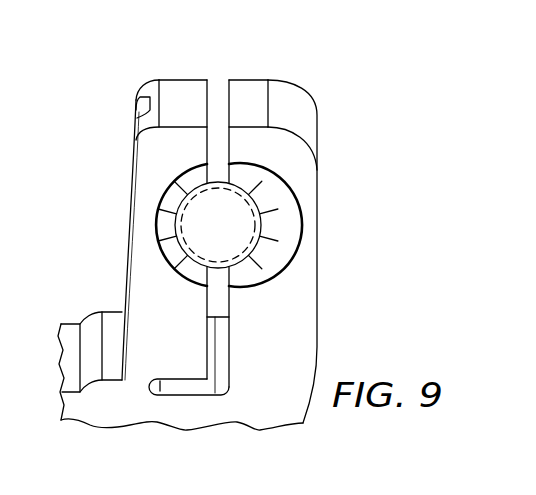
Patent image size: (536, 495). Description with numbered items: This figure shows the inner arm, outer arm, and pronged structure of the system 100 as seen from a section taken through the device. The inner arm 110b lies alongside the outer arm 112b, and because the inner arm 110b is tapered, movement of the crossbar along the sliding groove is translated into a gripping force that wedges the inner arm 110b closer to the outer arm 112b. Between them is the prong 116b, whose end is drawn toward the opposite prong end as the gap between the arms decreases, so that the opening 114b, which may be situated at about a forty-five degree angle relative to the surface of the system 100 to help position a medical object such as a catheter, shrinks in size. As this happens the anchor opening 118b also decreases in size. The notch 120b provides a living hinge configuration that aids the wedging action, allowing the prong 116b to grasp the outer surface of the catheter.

The system 100 is at (97, 83).
The inner arm 110b is at (148, 163).
The outer arm 112b is at (317, 172).
The opening 114b is at (273, 257).
The prong 116b is at (279, 214).
The anchor opening 118b is at (217, 95).
The notch 120b is at (183, 385).